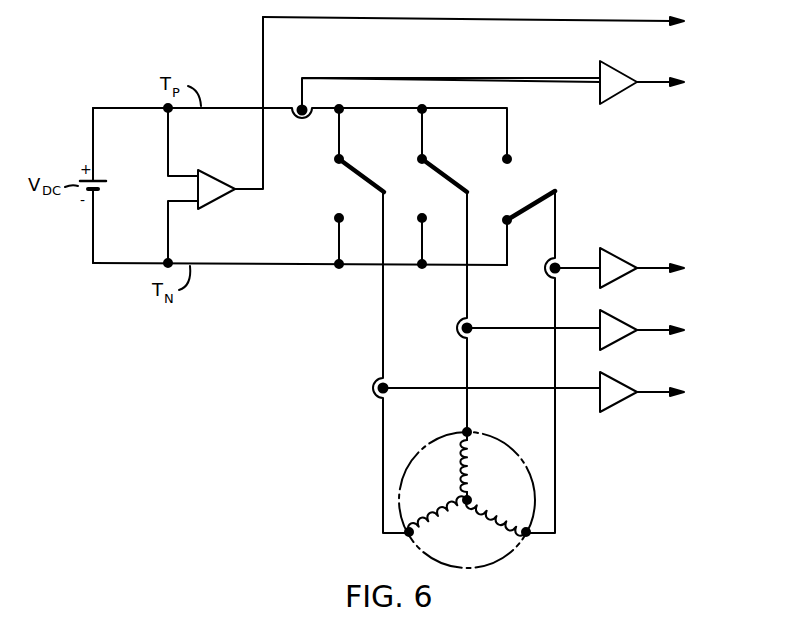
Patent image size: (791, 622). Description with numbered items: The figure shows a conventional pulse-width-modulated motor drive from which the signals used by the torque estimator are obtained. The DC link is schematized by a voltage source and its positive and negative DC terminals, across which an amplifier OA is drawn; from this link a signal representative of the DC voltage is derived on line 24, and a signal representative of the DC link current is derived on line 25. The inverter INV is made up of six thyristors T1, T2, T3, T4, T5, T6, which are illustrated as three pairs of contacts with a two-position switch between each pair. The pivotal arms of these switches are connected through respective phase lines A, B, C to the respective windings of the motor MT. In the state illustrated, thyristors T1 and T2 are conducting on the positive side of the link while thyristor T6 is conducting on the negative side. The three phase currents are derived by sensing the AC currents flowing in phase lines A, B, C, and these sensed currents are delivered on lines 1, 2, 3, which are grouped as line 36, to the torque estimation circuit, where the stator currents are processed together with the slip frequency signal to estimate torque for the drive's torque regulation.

The line 24 is at (548, 22).
The line 25 is at (550, 81).
The line 1 is at (646, 268).
The line 2 is at (658, 330).
The line 3 is at (663, 392).
The line 36 is at (707, 253).
The operational amplifier OA is at (222, 170).
The inverter INV is at (424, 204).
The thyristor T1 is at (359, 148).
The thyristor T2 is at (442, 148).
The thyristor T3 is at (520, 139).
The thyristor T4 is at (352, 239).
The thyristor T5 is at (436, 239).
The thyristor T6 is at (529, 228).
The phase line A is at (383, 430).
The phase line B is at (467, 420).
The phase line C is at (555, 424).
The motor MT is at (418, 459).